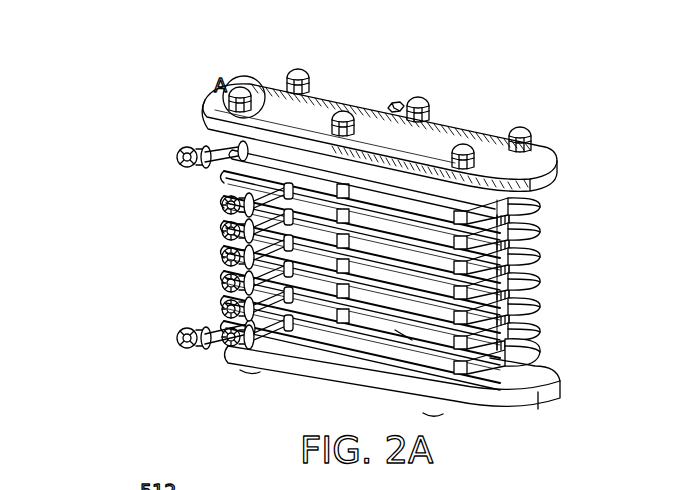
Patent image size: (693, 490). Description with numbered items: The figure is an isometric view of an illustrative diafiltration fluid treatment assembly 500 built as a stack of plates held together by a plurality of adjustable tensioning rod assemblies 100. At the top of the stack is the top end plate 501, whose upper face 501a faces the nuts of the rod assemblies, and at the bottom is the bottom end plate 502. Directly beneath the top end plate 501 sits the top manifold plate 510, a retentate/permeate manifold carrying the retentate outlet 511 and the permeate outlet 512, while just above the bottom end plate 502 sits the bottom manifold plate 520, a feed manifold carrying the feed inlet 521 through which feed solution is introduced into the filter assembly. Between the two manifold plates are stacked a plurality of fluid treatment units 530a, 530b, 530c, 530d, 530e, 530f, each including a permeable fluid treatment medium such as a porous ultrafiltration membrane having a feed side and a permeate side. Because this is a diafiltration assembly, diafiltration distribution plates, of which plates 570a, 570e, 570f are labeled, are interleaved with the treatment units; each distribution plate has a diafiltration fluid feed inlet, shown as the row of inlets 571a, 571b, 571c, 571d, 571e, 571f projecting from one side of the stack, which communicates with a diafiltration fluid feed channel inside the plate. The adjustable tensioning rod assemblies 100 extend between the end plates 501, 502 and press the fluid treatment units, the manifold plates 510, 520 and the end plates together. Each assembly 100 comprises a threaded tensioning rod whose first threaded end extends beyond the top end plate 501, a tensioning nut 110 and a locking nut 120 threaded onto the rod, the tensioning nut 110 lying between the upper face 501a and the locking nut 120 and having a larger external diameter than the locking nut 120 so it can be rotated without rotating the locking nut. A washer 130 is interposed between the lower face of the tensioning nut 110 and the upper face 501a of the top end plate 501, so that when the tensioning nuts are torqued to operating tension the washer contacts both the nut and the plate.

The adjustable tensioning rod assembly 100 is at (408, 76).
The tensioning nut 110 is at (291, 88).
The locking nut 120 is at (528, 130).
The washer 130 is at (432, 118).
The fluid treatment assembly 500 is at (108, 141).
The top end plate 501 is at (547, 183).
The upper face of the first end plate 501a is at (481, 142).
The bottom end plate 502 is at (545, 387).
The top manifold plate 510 is at (480, 210).
The retentate outlet 511 is at (178, 153).
The permeate outlet 512 is at (389, 105).
The bottom manifold plate 520 is at (524, 353).
The feed inlet 521 is at (178, 341).
The fluid treatment unit 530a is at (500, 199).
The fluid treatment unit 530b is at (514, 226).
The fluid treatment unit 530c is at (516, 261).
The fluid treatment unit 530d is at (516, 279).
The fluid treatment unit 530e is at (516, 305).
The fluid treatment unit 530f is at (483, 347).
The diafiltration distribution plate 570a is at (505, 244).
The diafiltration distribution plate 570e is at (403, 326).
The diafiltration distribution plate 570f is at (505, 332).
The diafiltration fluid feed inlet 571a is at (221, 205).
The diafiltration fluid feed inlet 571b is at (221, 231).
The diafiltration fluid feed inlet 571c is at (221, 257).
The diafiltration fluid feed inlet 571d is at (221, 283).
The diafiltration fluid feed inlet 571e is at (221, 309).
The diafiltration fluid feed inlet 571f is at (227, 346).